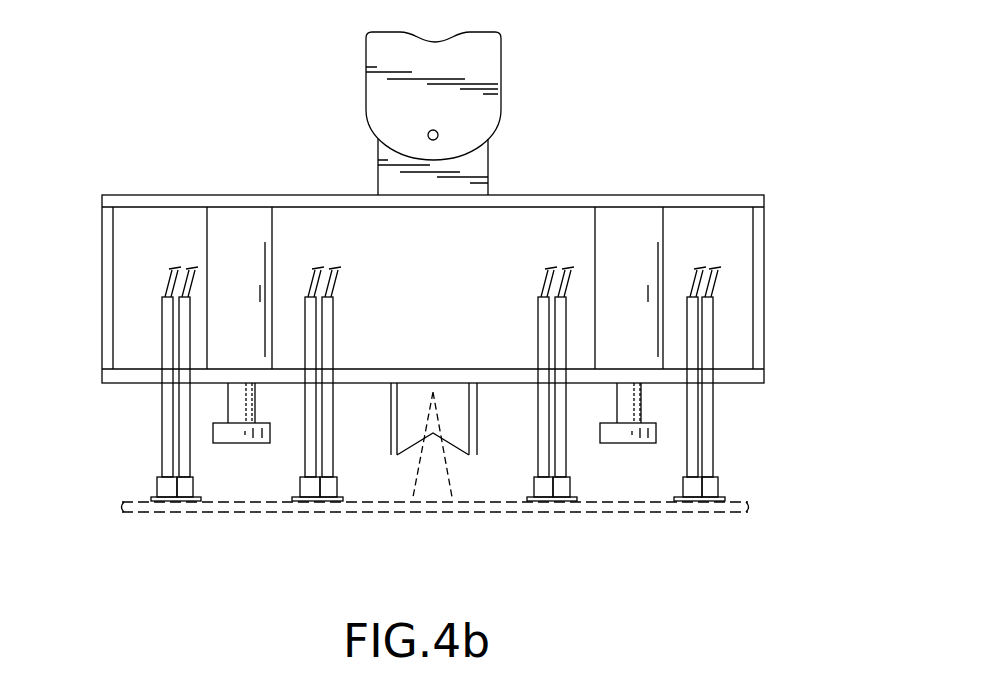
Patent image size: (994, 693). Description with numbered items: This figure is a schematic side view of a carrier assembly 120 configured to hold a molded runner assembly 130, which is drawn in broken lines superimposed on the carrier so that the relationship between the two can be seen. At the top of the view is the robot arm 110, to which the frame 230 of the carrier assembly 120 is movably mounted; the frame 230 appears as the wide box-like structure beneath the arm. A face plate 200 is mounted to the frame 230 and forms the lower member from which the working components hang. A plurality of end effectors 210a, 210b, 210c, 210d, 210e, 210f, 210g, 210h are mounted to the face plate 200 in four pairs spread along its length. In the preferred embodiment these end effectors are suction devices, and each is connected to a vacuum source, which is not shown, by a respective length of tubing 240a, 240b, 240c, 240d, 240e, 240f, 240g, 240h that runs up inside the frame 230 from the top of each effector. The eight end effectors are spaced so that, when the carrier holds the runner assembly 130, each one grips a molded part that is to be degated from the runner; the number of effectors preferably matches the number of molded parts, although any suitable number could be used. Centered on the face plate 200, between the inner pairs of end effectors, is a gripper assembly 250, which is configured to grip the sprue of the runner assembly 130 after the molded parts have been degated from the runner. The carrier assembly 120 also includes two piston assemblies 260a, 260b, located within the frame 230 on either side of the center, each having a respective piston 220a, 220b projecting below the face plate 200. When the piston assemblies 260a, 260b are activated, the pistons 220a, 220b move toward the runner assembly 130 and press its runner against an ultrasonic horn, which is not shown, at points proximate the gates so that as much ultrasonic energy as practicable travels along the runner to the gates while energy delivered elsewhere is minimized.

The robot arm 110 is at (490, 67).
The carrier assembly 120 is at (684, 68).
The runner assembly 130 is at (433, 492).
The face plate 200 is at (752, 375).
The end effector 210a is at (185, 487).
The end effector 210b is at (330, 485).
The end effector 210c is at (168, 482).
The end effector 210d is at (310, 487).
The end effector 210e is at (565, 485).
The end effector 210f is at (712, 485).
The end effector 210g is at (545, 487).
The end effector 210h is at (693, 487).
The piston 220a is at (232, 430).
The piston 220b is at (627, 435).
The frame 230 is at (766, 198).
The tubing 240a is at (190, 267).
The tubing 240b is at (340, 267).
The tubing 240c is at (173, 267).
The tubing 240d is at (323, 267).
The tubing 240e is at (568, 268).
The tubing 240f is at (717, 270).
The tubing 240g is at (548, 267).
The tubing 240h is at (698, 263).
The gripper assembly 250 is at (460, 415).
The piston assembly 260a is at (243, 227).
The piston assembly 260b is at (636, 213).